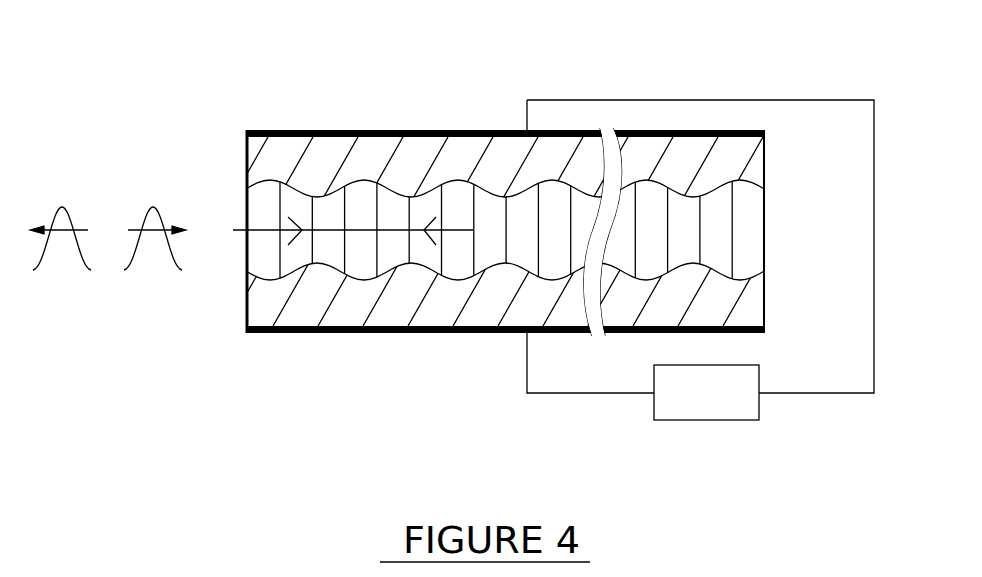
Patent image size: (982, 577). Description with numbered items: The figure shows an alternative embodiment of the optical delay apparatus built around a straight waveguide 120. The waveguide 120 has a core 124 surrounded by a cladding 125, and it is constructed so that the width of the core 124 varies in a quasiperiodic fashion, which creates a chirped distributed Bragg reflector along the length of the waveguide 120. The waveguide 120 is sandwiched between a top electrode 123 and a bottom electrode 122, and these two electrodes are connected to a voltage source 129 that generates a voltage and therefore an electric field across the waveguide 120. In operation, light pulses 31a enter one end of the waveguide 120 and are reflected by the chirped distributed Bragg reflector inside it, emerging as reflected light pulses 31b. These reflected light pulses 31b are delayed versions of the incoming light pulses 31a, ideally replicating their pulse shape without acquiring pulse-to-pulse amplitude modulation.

The straight waveguide 120 is at (251, 53).
The bottom electrode 122 is at (388, 333).
The top electrode 123 is at (405, 131).
The core 124 is at (527, 243).
The cladding 125 is at (503, 152).
The voltage source 129 is at (730, 421).
The light pulses 31a is at (153, 205).
The reflected light pulses 31b is at (62, 205).